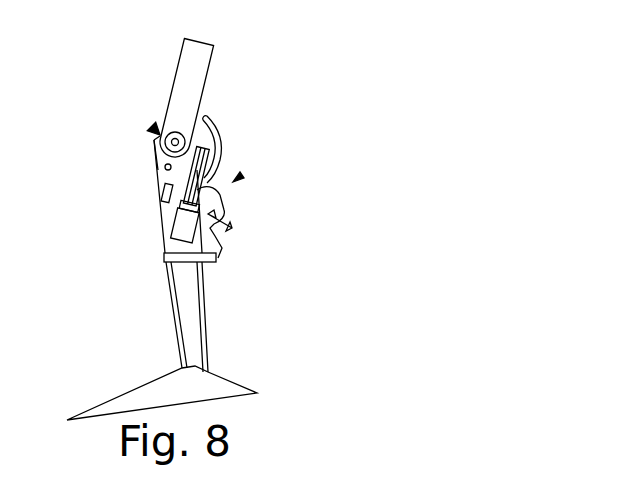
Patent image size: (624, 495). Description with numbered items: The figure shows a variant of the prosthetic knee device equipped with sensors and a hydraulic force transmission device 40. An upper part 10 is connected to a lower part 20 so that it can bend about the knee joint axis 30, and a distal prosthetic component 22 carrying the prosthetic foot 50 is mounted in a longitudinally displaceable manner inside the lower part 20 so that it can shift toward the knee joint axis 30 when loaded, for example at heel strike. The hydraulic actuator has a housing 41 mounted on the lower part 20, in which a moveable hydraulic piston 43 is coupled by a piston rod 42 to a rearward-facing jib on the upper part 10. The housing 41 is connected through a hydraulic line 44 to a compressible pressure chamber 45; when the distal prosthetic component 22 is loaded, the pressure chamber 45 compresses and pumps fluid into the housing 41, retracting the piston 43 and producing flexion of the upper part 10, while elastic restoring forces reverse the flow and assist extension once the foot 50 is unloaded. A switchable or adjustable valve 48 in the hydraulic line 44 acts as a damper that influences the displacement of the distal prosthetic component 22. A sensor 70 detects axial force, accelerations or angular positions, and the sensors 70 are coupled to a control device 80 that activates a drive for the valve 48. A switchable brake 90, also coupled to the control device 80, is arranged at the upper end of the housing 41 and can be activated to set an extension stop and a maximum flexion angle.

The upper part 10 is at (210, 68).
The lower part 20 is at (171, 290).
The distal prosthetic component 22 is at (207, 333).
The knee joint axis 30 is at (152, 146).
The hydraulic force transmission device 40 is at (260, 218).
The housing 41 is at (163, 224).
The piston rod 42 is at (221, 152).
The hydraulic piston 43 is at (224, 226).
The hydraulic line 44 is at (218, 253).
The pressure chamber 45 is at (213, 259).
The valve 48 is at (233, 228).
The prosthetic foot 50 is at (123, 396).
The sensor 70 is at (163, 166).
The control device 80 is at (161, 186).
The switchable brake 90 is at (156, 128).